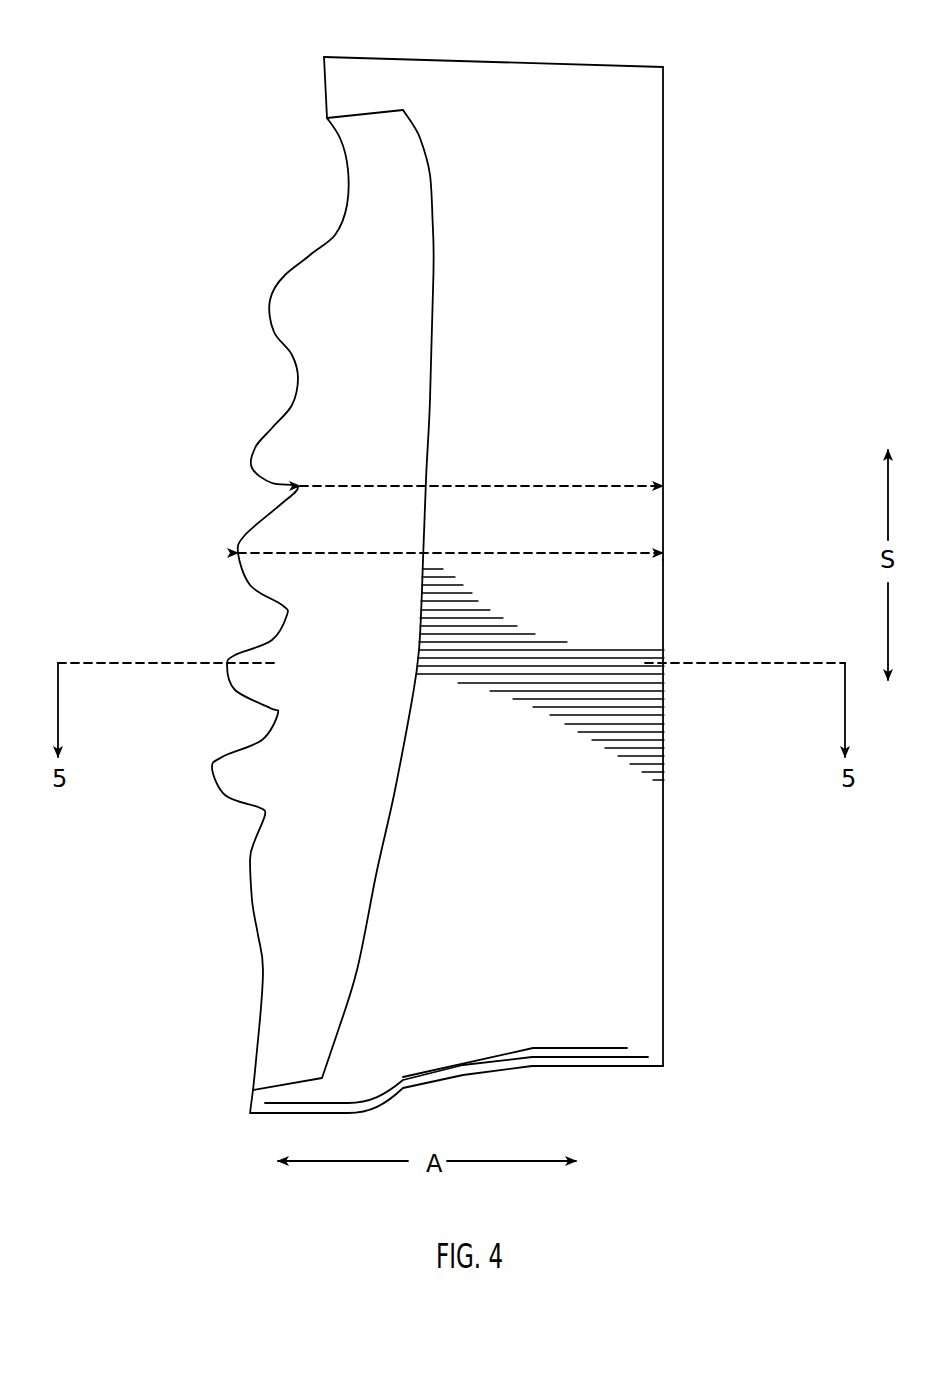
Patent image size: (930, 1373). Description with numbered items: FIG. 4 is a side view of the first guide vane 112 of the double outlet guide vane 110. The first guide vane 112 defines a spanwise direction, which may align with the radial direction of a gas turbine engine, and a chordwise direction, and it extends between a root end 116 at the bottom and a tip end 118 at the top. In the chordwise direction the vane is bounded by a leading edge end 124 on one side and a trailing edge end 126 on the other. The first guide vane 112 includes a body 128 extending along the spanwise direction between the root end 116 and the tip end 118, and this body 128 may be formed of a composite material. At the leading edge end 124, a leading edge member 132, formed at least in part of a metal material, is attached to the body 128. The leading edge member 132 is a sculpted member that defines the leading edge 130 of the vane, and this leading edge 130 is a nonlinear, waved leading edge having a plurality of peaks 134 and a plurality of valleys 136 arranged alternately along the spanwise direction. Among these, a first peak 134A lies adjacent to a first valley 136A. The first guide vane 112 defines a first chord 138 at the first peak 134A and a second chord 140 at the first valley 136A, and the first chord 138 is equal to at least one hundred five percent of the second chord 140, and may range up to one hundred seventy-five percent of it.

The double outlet guide vane 110 is at (726, 35).
The first guide vane 112 is at (628, 262).
The root end 116 is at (657, 1102).
The tip end 118 is at (568, 43).
The leading edge end 124 is at (166, 646).
The trailing edge end 126 is at (722, 932).
The body 128 is at (640, 823).
The leading edge 130 is at (243, 855).
The leading edge member 132 is at (330, 270).
The peaks 134 is at (215, 780).
The first peak 134A is at (238, 540).
The valleys 136 is at (216, 703).
The first valley 136A is at (260, 493).
The first chord 138 is at (633, 555).
The second chord 140 is at (605, 485).